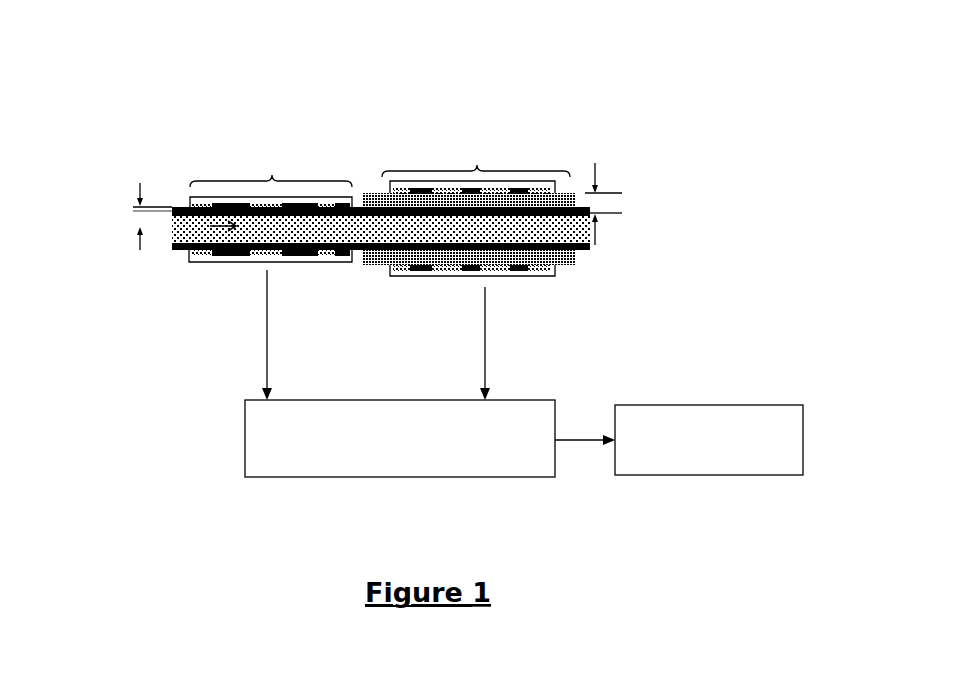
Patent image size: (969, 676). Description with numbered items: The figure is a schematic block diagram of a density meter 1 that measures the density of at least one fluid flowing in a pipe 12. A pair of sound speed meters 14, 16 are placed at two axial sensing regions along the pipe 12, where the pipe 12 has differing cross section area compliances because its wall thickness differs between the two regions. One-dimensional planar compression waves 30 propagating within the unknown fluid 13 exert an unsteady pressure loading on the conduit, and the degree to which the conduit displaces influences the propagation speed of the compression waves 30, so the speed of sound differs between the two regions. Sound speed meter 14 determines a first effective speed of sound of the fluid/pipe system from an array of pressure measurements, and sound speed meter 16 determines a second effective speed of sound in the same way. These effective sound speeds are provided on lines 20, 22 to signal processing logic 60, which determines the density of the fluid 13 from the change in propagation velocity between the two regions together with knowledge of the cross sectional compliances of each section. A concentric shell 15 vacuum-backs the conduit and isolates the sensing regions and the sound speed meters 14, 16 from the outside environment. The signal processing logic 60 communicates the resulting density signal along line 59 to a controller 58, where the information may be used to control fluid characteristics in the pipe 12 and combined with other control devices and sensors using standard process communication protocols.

The density meter 1 is at (418, 91).
The pipe 12 is at (590, 250).
The unknown fluid 13 is at (354, 223).
The sound speed meter 14 is at (235, 160).
The concentric shell 15 is at (190, 197).
The sound speed meter 16 is at (546, 140).
The line 20 is at (262, 303).
The line 22 is at (488, 310).
The compression waves 30 is at (208, 223).
The controller 58 is at (680, 475).
The line 59 is at (588, 440).
The signal processing logic 60 is at (257, 458).